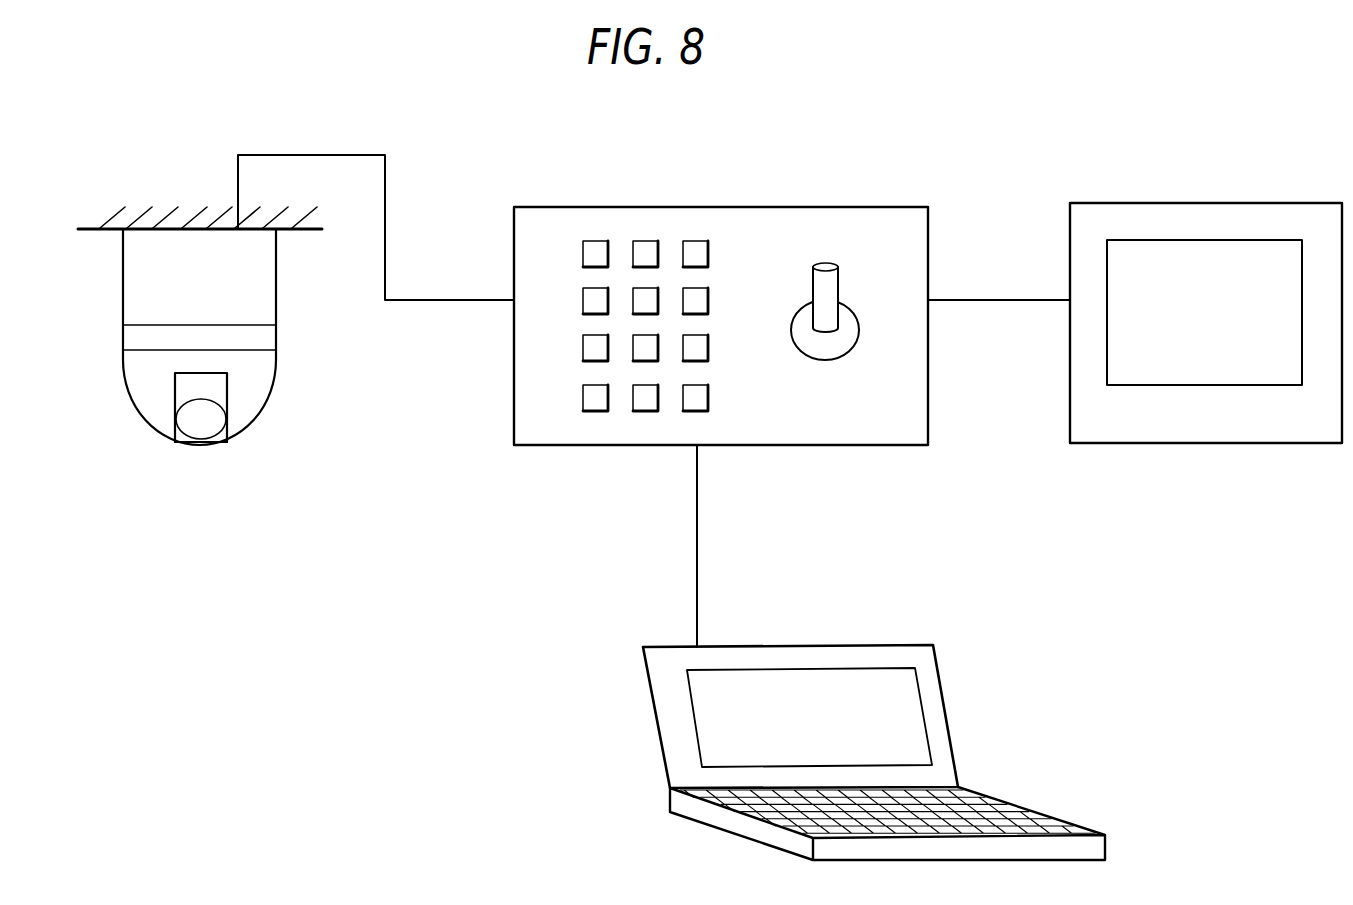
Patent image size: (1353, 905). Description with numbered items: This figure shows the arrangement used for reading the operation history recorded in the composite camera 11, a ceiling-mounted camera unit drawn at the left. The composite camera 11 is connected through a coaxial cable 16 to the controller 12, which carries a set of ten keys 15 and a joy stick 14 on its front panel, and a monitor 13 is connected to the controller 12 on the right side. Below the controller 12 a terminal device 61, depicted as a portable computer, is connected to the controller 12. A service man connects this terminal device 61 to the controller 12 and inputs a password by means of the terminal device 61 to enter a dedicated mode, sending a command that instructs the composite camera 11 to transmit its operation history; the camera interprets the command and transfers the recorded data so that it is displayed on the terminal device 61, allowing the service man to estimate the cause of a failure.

The composite camera 11 is at (93, 227).
The controller 12 is at (721, 289).
The monitor 13 is at (1119, 203).
The joy stick 14 is at (839, 285).
The ten keys 15 is at (709, 253).
The coaxial cable 16 is at (313, 153).
The terminal device 61 is at (954, 738).